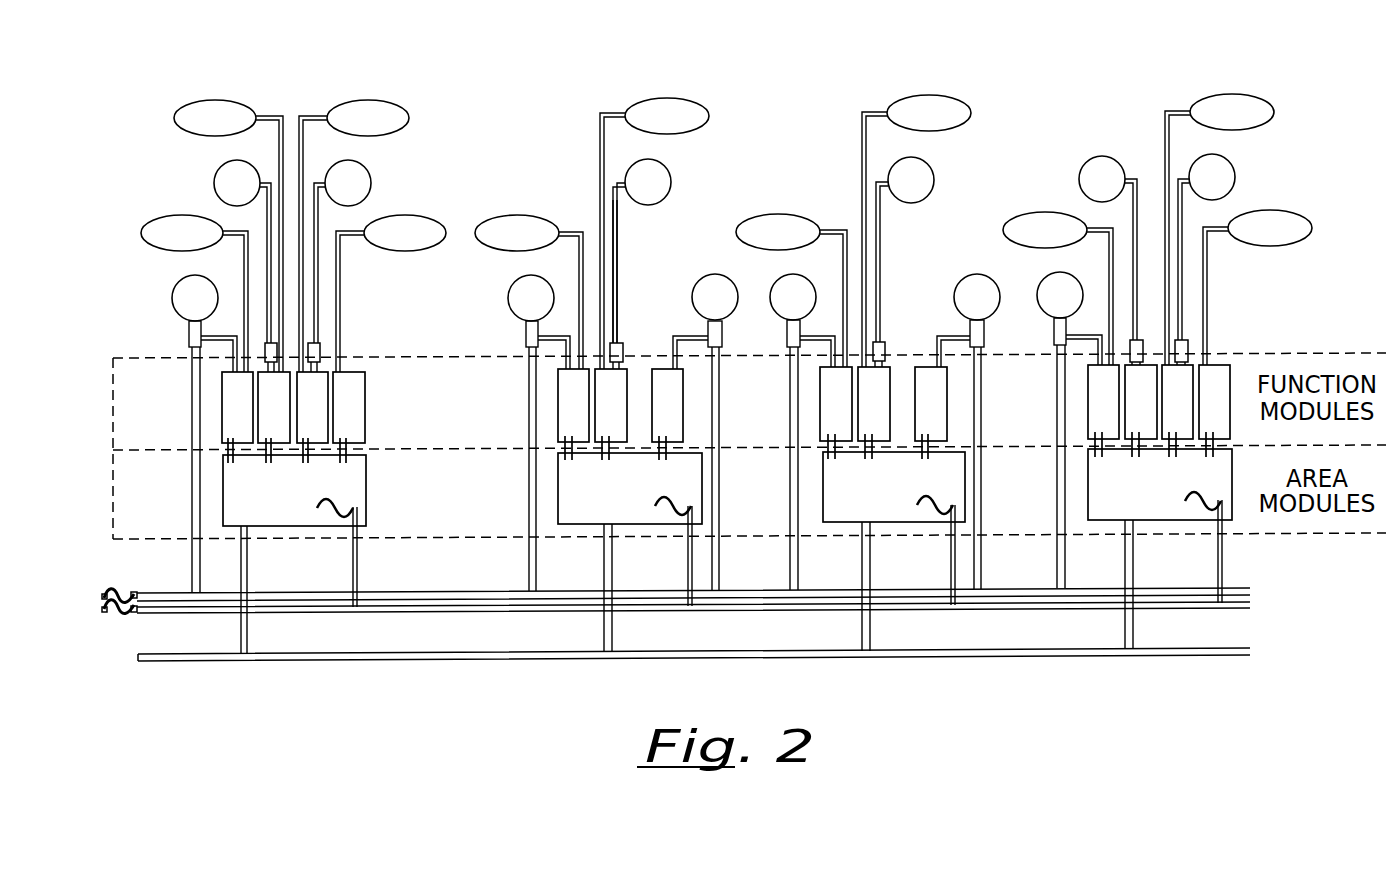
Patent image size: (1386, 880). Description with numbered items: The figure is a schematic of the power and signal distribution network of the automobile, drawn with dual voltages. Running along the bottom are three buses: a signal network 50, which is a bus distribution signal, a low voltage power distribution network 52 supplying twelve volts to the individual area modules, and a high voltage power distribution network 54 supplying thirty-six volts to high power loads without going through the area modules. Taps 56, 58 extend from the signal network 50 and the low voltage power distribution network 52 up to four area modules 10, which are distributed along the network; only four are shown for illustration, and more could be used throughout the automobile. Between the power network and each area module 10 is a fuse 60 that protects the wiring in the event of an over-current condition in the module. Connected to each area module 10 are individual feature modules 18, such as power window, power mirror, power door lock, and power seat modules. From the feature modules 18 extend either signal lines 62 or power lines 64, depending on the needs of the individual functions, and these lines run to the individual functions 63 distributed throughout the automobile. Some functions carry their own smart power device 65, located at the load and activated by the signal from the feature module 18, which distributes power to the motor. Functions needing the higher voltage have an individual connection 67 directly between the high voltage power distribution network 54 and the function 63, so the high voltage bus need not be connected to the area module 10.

The area module 10 is at (347, 482).
The feature module 18 is at (267, 407).
The signal network 50 is at (753, 658).
The low voltage power distribution network 52 is at (630, 610).
The high voltage power distribution network 54 is at (413, 542).
The tap 56 is at (604, 585).
The tap 58 is at (248, 585).
The fuse 60 is at (320, 506).
The signal line 62 is at (600, 181).
The function 63 is at (215, 100).
The power line 64 is at (617, 252).
The smart power device 65 is at (322, 348).
The individual connection 67 is at (192, 492).